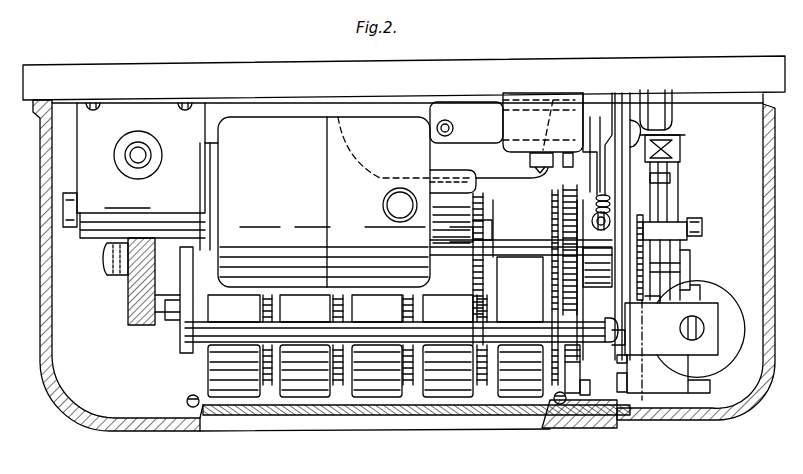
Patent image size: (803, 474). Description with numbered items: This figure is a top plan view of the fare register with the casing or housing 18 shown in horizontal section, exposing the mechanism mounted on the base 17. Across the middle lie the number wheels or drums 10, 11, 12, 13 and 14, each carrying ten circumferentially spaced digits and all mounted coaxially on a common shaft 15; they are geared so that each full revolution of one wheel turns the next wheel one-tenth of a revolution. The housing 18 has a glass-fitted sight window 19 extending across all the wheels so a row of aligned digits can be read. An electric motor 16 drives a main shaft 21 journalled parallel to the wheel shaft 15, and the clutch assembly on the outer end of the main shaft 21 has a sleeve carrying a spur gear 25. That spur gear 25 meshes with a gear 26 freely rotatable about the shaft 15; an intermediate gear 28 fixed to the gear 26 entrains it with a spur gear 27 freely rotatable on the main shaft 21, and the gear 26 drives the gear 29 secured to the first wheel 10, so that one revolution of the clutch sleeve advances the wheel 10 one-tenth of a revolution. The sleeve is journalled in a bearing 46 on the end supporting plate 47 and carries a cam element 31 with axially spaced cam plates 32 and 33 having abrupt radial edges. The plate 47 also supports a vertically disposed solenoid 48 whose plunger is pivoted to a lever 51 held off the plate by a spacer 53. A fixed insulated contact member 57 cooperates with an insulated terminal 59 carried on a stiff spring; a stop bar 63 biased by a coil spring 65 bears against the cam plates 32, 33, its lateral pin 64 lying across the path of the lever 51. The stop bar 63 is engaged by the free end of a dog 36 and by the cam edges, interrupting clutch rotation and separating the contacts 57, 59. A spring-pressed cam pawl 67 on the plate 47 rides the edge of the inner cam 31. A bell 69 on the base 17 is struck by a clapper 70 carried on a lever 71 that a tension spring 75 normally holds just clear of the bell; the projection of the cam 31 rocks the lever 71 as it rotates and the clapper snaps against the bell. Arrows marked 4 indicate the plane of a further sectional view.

The section line 4- 4 is at (634, 106).
The numeral wheel 10 is at (520, 327).
The numeral wheel 11 is at (448, 346).
The numeral wheel 12 is at (377, 346).
The numeral wheel 13 is at (305, 346).
The numeral wheel 14 is at (234, 346).
The common shaft 15 is at (177, 308).
The electric motor 16 is at (344, 202).
The base 17 is at (276, 72).
The casing or housing 18 is at (44, 331).
The sight window 19 is at (270, 415).
The main drive shaft 21 is at (502, 243).
The spur gear 25 is at (577, 217).
The gear 26 is at (583, 393).
The spur gear 27 is at (558, 196).
The intermediate gear 28 is at (575, 370).
The gear 29 is at (573, 312).
The cam element 31 is at (637, 217).
The cam plate 32 is at (660, 253).
The cam plate 33 is at (688, 270).
The dog 36 is at (552, 208).
The bearing 46 is at (597, 262).
The end supporting plate 47 is at (625, 318).
The solenoid 48 is at (730, 302).
The lever 51 is at (697, 286).
The spacer 53 is at (668, 374).
The electrical contact member 57 is at (676, 147).
The electrical terminal 59 is at (676, 160).
The stop bar 63 is at (635, 217).
The pin 64 is at (696, 225).
The coil spring 65 is at (667, 110).
The cam pawl 67 is at (650, 300).
The bell 69 is at (489, 248).
The clapper 70 is at (482, 120).
The lever 71 is at (600, 140).
The tension spring 75 is at (607, 128).